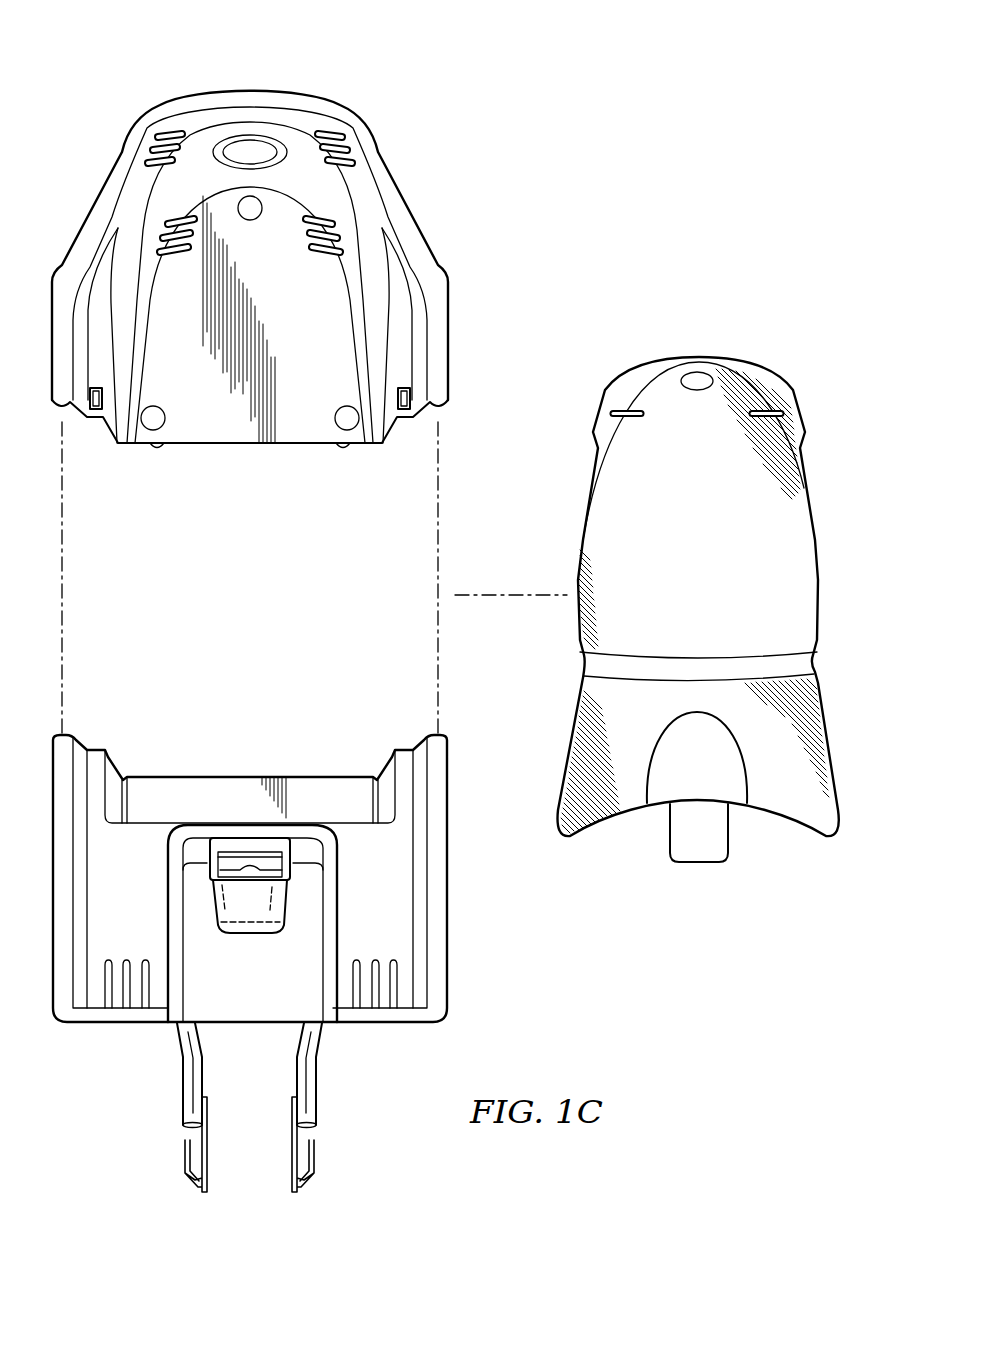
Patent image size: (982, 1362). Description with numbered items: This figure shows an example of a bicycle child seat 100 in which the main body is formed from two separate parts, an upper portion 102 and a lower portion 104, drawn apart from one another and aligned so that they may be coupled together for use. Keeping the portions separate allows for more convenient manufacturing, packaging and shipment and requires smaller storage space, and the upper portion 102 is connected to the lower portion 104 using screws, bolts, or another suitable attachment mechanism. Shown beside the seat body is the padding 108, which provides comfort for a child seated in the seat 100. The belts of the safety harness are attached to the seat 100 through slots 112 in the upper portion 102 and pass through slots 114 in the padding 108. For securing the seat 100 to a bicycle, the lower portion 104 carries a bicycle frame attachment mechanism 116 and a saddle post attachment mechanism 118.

The bicycle child seat 100 is at (150, 50).
The upper portion 102 is at (250, 248).
The lower portion 104 is at (250, 963).
The padding 108 is at (719, 602).
The slots 112 is at (318, 265).
The slots 114 is at (633, 418).
The bicycle frame attachment mechanism 116 is at (186, 1160).
The saddle post attachment mechanism 118 is at (254, 878).